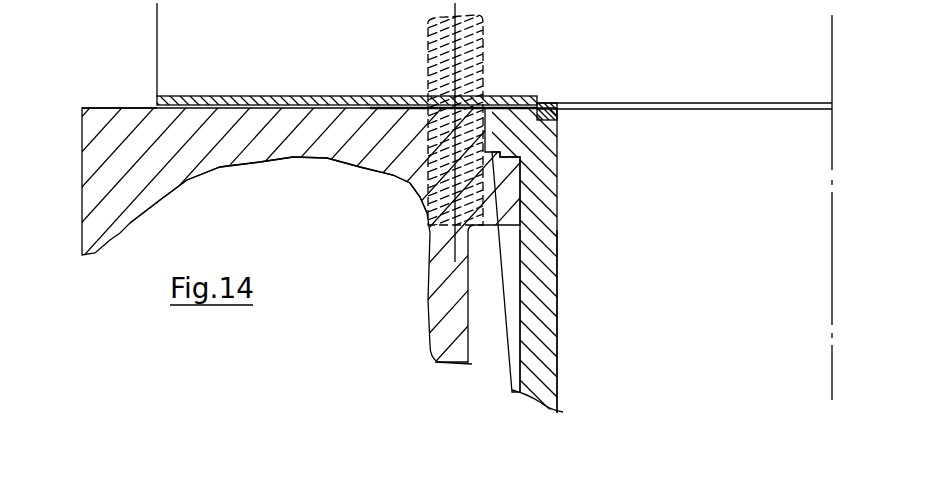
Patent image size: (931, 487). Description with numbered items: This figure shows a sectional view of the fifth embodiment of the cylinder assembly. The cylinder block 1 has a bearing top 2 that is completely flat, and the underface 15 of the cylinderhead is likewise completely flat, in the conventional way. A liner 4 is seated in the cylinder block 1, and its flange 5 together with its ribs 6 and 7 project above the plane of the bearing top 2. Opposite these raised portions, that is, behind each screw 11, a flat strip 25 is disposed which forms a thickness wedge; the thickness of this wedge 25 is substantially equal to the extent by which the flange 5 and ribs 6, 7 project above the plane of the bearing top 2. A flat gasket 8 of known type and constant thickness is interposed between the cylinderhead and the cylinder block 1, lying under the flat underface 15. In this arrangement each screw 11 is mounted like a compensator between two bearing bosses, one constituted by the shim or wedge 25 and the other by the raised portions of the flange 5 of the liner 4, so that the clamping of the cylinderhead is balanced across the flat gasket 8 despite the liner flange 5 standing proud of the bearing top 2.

The cylinder block 1 is at (100, 208).
The top of the cylinder block 2 is at (93, 106).
The liner 4 is at (537, 323).
The flange of the liner 5 is at (513, 143).
The rib of the liner flange 6 is at (557, 117).
The rib of the liner flange 7 is at (505, 100).
The flat gasket 8 is at (157, 97).
The screw 11 is at (475, 52).
The underface of the cylinderhead 15 is at (254, 96).
The flat strip (thickness wedge) 25 is at (342, 163).